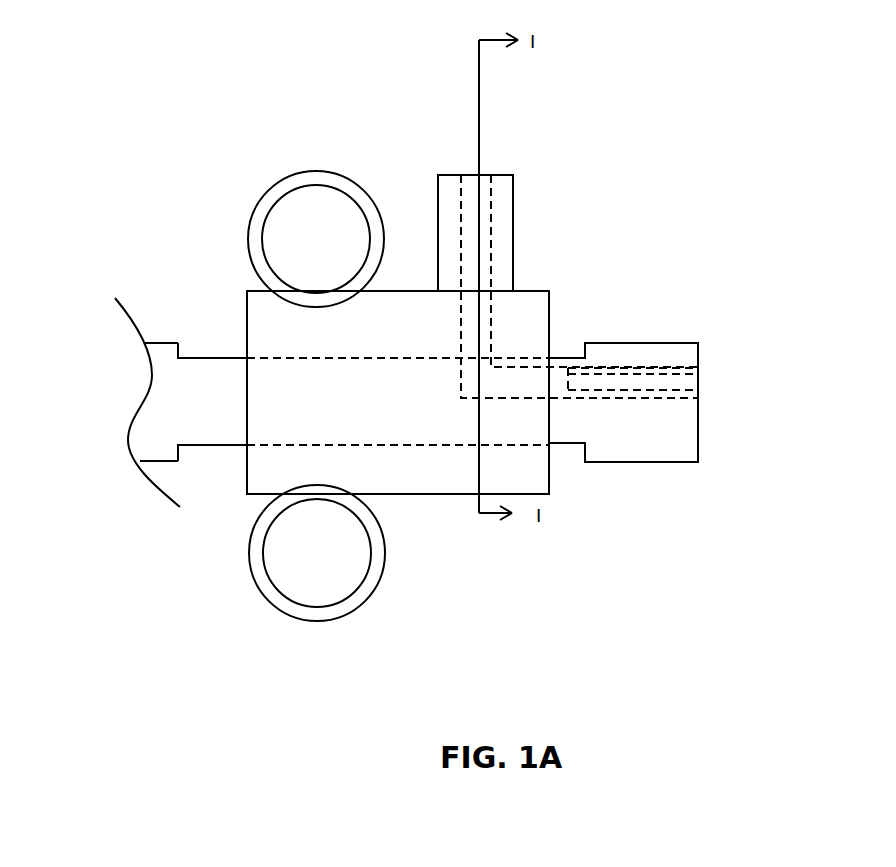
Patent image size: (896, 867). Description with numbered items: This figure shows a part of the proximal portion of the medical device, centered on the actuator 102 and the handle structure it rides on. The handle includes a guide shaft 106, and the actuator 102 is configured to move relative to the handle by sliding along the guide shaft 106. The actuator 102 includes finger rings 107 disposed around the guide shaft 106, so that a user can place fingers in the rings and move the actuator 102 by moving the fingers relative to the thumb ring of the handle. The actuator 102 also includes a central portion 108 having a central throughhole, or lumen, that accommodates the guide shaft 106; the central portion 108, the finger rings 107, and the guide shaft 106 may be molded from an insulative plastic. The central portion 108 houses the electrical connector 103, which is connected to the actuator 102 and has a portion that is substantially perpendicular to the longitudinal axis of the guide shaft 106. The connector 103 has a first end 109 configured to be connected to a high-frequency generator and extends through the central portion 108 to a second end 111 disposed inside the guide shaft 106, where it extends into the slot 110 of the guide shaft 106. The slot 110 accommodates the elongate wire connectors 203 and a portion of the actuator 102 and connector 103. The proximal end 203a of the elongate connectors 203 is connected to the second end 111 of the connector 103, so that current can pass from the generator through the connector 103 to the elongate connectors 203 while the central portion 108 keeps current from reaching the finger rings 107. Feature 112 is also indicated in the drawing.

The actuator 102 is at (432, 546).
The electrical connector 103 is at (490, 270).
The guide shaft 106 is at (168, 380).
The finger rings 107 is at (317, 178).
The central portion 108 is at (528, 318).
The first end 109 is at (489, 193).
The slot 110 is at (207, 352).
The second end 111 is at (567, 384).
The bore wall 112 is at (502, 230).
The elongate wire connectors 203 is at (648, 366).
The proximal end 203a is at (577, 369).